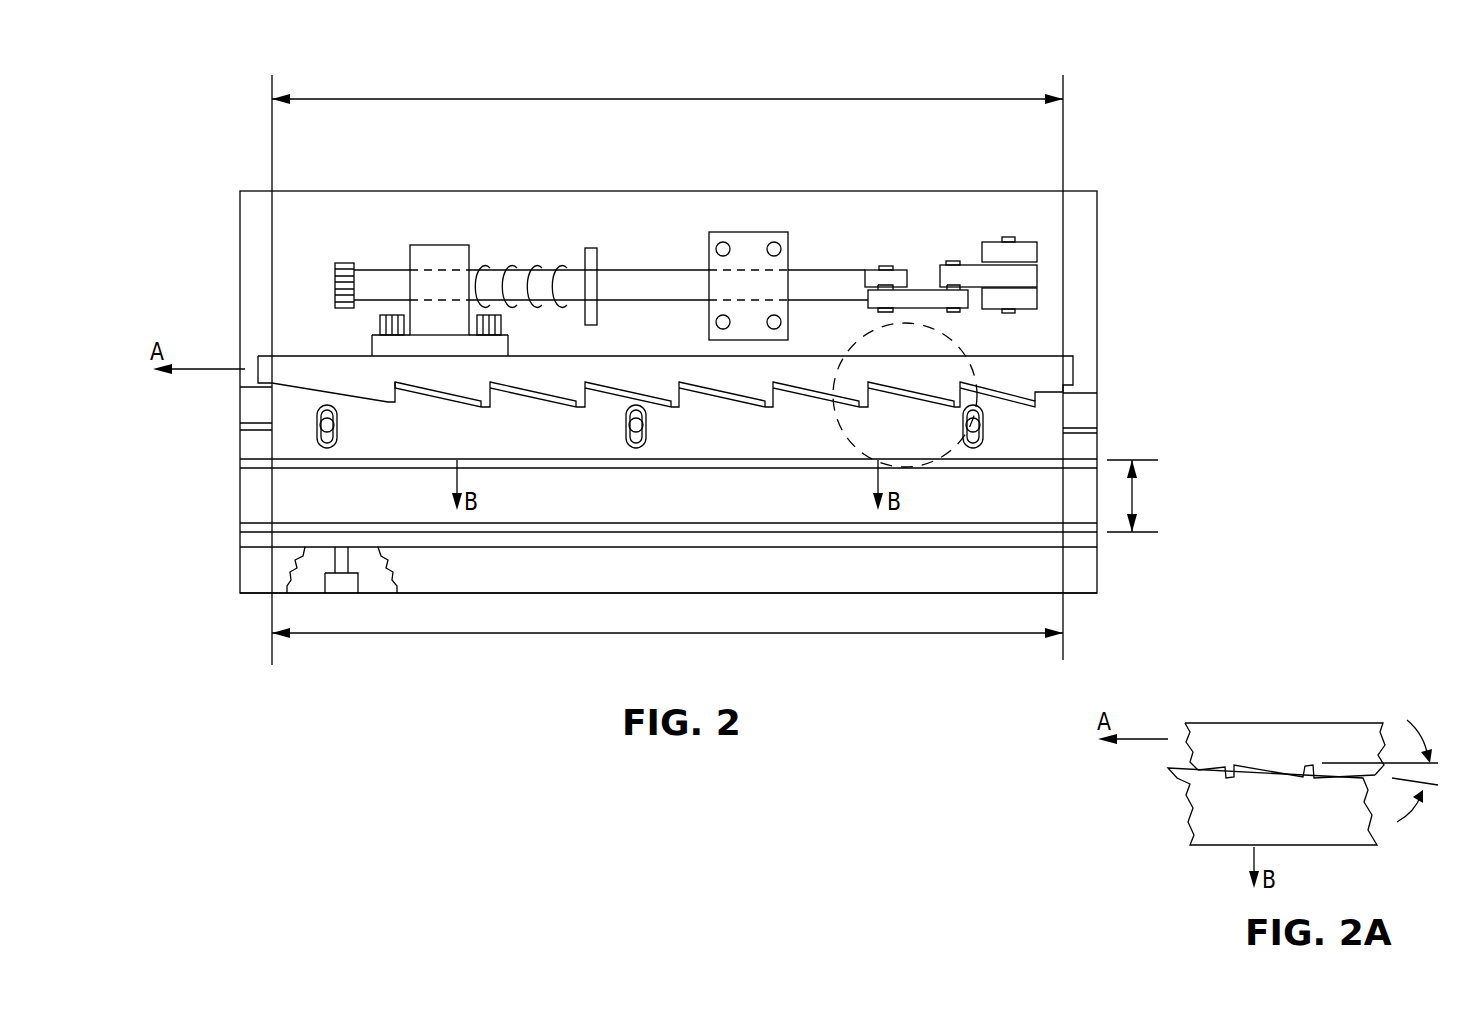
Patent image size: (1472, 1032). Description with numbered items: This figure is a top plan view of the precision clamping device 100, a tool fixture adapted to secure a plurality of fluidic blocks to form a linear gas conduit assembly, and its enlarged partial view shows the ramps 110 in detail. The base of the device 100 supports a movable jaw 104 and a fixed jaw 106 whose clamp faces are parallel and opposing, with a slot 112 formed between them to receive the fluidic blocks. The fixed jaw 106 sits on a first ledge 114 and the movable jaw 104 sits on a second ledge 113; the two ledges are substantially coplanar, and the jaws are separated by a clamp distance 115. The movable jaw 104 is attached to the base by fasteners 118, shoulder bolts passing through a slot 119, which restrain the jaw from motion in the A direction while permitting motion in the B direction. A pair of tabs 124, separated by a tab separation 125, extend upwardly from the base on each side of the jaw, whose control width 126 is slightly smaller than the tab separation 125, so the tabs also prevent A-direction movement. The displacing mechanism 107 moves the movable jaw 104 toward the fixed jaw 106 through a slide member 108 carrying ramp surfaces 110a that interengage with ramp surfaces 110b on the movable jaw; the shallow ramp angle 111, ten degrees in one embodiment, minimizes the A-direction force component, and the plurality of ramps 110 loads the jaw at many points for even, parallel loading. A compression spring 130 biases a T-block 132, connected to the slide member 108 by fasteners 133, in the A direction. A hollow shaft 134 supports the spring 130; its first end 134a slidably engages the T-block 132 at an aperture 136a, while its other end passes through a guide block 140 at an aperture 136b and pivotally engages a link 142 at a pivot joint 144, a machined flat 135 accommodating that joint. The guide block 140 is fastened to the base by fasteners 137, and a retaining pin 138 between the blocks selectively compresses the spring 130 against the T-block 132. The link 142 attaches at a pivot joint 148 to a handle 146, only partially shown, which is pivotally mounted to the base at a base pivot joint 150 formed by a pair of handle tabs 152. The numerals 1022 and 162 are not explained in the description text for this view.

In FIG. 2, the clamping device 100 is at (232, 664).
In FIG. 2, the housing frame 1022 is at (240, 247).
In FIG. 2, the movable jaw 104 is at (243, 447).
In FIG. 2, the fixed jaw 106 is at (240, 540).
In FIG. 2, the displacing mechanism 107 is at (622, 176).
In FIG. 2, the slide member 108 is at (297, 377).
In FIG. 2A, the slide member 108 is at (1225, 730).
In FIG. 2, the ramps 110 is at (775, 425).
In FIG. 2A, the ramps 110 is at (1258, 742).
In FIG. 2A, the ramp surfaces on slide member 110a is at (1362, 762).
In FIG. 2A, the ramp surfaces on movable jaw 110b is at (1175, 778).
In FIG. 2A, the ramp angle 111 is at (1407, 720).
In FIG. 2, the slot 112 is at (240, 497).
In FIG. 2, the second ledge 113 is at (240, 462).
In FIG. 2, the first ledge 114 is at (1075, 532).
In FIG. 2, the clamp distance 115 is at (1135, 493).
In FIG. 2, the fasteners 118 is at (648, 427).
In FIG. 2, the slot 119 is at (340, 427).
In FIG. 2, the tabs 124 is at (240, 400).
In FIG. 2, the tab separation 125 is at (667, 97).
In FIG. 2, the control width 126 is at (667, 636).
In FIG. 2, the compression spring 130 is at (535, 303).
In FIG. 2, the T-block 132 is at (440, 245).
In FIG. 2, the fasteners 133 is at (380, 325).
In FIG. 2, the hollow shaft 134 is at (668, 272).
In FIG. 2, the first end of shaft 134a is at (382, 270).
In FIG. 2, the machined flat 135 is at (900, 284).
In FIG. 2, the aperture 136a is at (440, 270).
In FIG. 2, the aperture 136b is at (746, 268).
In FIG. 2, the fasteners 137 is at (781, 246).
In FIG. 2, the retaining pin 138 is at (593, 250).
In FIG. 2, the guide block 140 is at (720, 232).
In FIG. 2, the link 142 is at (915, 290).
In FIG. 2, the pivot joint 144 is at (885, 265).
In FIG. 2, the handle 146 is at (1037, 277).
In FIG. 2, the pivot joint 148 is at (952, 261).
In FIG. 2, the base pivot joint 150 is at (1008, 237).
In FIG. 2, the handle tabs 152 is at (1037, 249).
In FIG. 2, the adjustment knob 162 is at (340, 262).